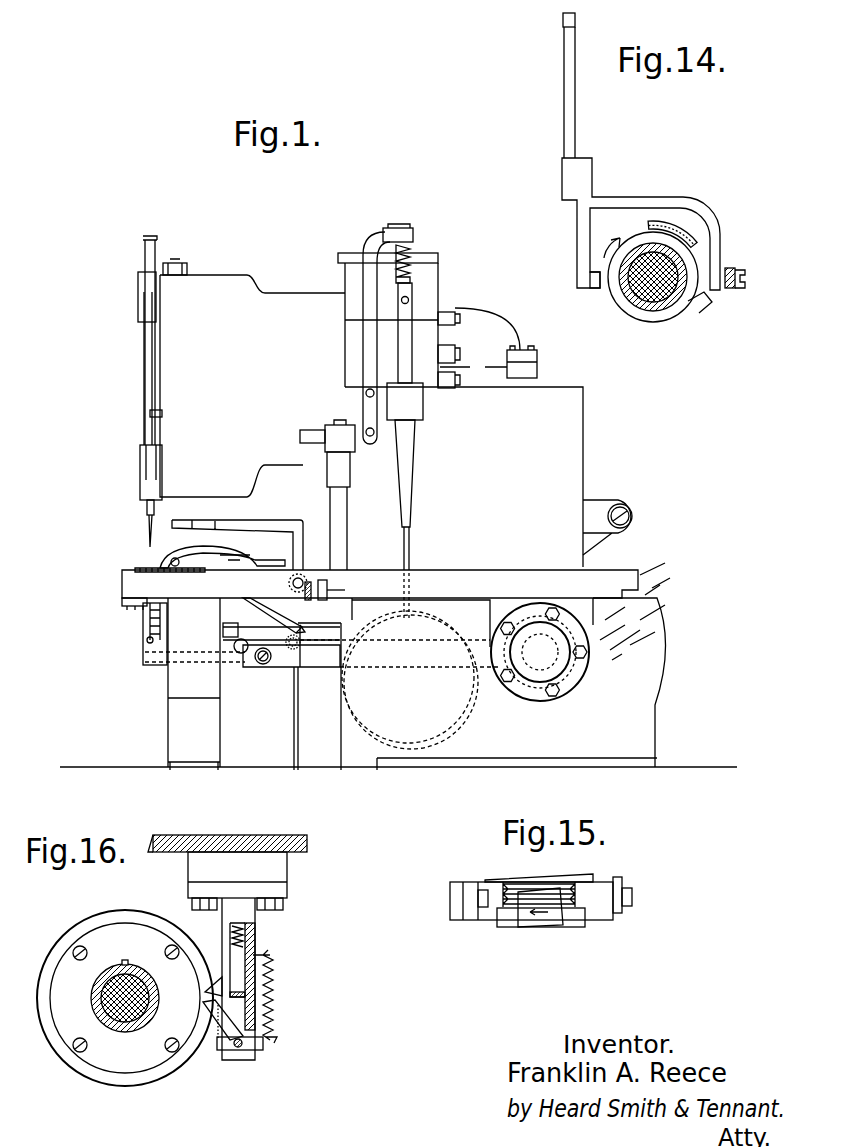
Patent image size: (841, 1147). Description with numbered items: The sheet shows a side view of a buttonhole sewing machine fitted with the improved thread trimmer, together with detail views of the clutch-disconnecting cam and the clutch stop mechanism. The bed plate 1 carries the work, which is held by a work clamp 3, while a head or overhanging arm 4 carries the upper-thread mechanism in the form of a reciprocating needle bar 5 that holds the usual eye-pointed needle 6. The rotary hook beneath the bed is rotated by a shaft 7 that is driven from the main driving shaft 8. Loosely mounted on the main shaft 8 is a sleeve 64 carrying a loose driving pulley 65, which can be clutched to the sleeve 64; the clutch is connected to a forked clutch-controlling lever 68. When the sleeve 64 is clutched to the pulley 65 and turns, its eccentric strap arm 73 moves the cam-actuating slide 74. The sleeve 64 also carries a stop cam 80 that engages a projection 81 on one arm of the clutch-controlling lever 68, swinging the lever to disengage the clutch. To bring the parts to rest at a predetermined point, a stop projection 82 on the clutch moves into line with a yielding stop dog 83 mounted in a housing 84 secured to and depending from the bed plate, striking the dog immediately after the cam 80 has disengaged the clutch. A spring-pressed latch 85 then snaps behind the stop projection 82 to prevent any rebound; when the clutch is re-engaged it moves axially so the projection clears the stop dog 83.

In FIG. 1, the bed plate 1 is at (140, 582).
In FIG. 1, the work clamp 3 is at (157, 567).
In FIG. 1, the head or overhanging arm 4 is at (396, 422).
In FIG. 1, the needle bar 5 is at (150, 505).
In FIG. 1, the eye-pointed needle 6 is at (148, 535).
In FIG. 1, the shaft 7 is at (262, 630).
In FIG. 1, the arm 73 is at (321, 660).
In FIG. 1, the cam-actuating slide 74 is at (156, 657).
In FIG. 14, the main driving shaft 8 is at (656, 290).
In FIG. 16, the main driving shaft 8 is at (100, 995).
In FIG. 14, the sleeve 64 is at (670, 305).
In FIG. 16, the sleeve 64 is at (127, 1023).
In FIG. 16, the loose driving pulley 65 is at (68, 1055).
In FIG. 14, the clutch-controlling lever 68 is at (564, 118).
In FIG. 15, the clutch-controlling lever 68 is at (472, 913).
In FIG. 14, the stop cam 80 is at (678, 235).
In FIG. 15, the stop cam 80 is at (558, 895).
In FIG. 14, the projection 81 is at (597, 290).
In FIG. 15, the projection 81 is at (483, 893).
In FIG. 16, the stop projection 82 is at (203, 1007).
In FIG. 16, the yielding stop dog 83 is at (215, 987).
In FIG. 16, the housing 84 is at (255, 940).
In FIG. 16, the spring-pressed latch 85 is at (216, 1040).